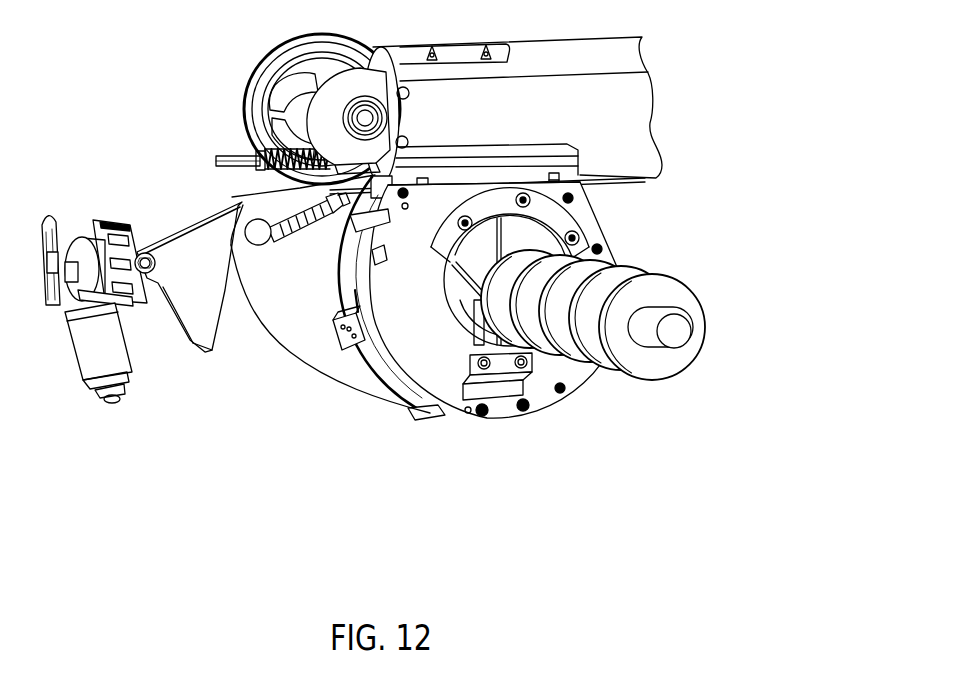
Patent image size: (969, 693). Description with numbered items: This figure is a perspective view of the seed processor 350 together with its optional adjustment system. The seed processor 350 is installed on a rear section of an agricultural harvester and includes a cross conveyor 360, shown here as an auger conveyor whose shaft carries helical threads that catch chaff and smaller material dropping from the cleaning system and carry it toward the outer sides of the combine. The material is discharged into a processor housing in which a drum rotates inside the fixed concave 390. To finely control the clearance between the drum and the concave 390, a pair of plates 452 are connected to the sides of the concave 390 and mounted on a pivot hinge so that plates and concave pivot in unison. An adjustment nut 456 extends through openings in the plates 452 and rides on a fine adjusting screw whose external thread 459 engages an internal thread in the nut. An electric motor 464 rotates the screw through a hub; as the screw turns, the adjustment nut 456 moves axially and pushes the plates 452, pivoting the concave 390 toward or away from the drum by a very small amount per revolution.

The seed processor 350 is at (519, 325).
The cross conveyor 360 is at (648, 287).
The concave 390 is at (380, 372).
The plates 452 is at (246, 203).
The adjustment nut 456 is at (258, 246).
The external thread 459 is at (303, 232).
The electric motor 464 is at (74, 366).